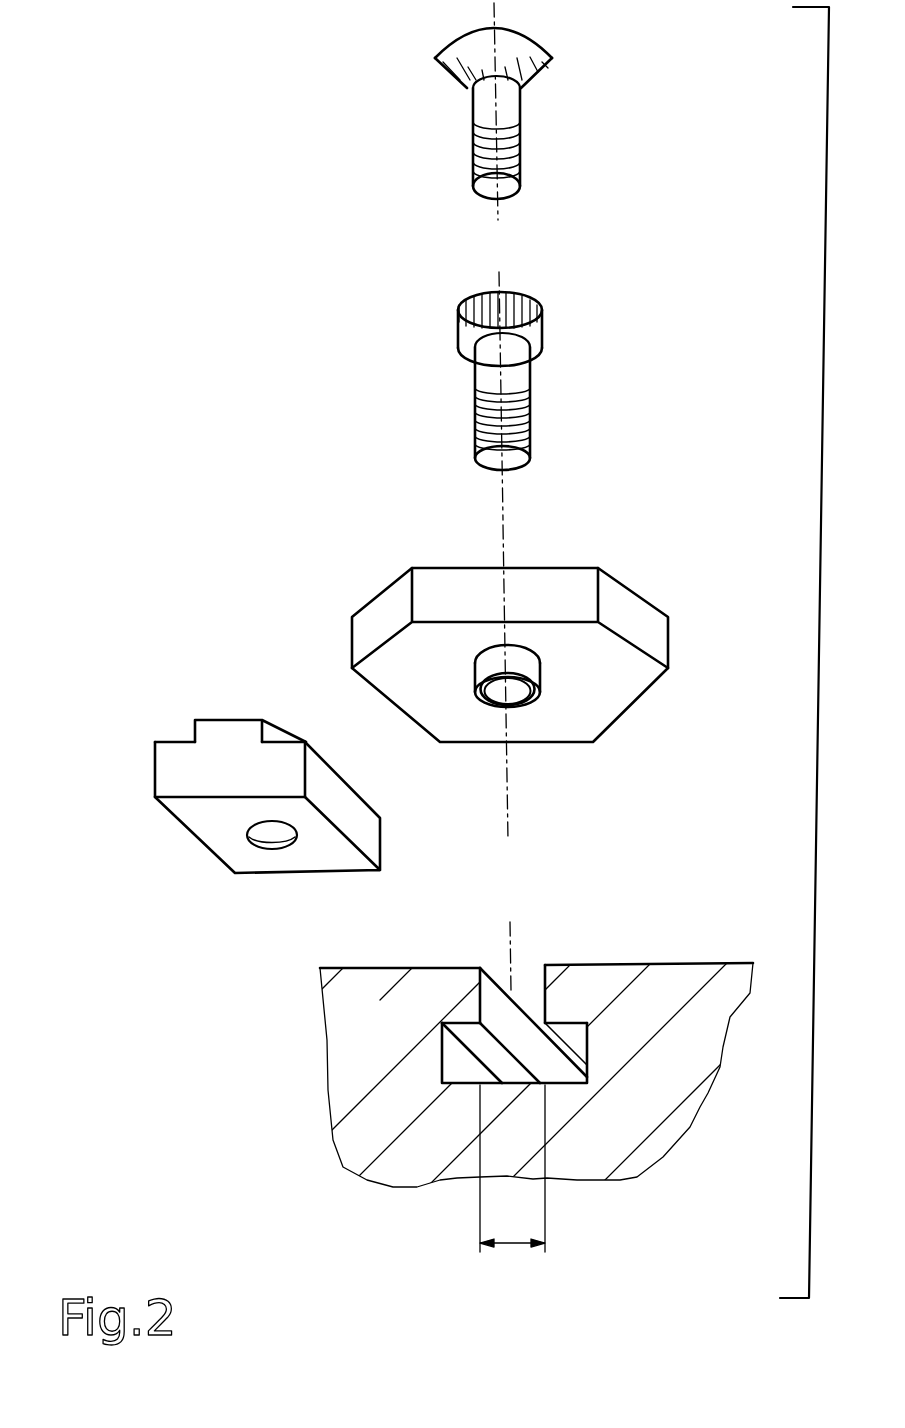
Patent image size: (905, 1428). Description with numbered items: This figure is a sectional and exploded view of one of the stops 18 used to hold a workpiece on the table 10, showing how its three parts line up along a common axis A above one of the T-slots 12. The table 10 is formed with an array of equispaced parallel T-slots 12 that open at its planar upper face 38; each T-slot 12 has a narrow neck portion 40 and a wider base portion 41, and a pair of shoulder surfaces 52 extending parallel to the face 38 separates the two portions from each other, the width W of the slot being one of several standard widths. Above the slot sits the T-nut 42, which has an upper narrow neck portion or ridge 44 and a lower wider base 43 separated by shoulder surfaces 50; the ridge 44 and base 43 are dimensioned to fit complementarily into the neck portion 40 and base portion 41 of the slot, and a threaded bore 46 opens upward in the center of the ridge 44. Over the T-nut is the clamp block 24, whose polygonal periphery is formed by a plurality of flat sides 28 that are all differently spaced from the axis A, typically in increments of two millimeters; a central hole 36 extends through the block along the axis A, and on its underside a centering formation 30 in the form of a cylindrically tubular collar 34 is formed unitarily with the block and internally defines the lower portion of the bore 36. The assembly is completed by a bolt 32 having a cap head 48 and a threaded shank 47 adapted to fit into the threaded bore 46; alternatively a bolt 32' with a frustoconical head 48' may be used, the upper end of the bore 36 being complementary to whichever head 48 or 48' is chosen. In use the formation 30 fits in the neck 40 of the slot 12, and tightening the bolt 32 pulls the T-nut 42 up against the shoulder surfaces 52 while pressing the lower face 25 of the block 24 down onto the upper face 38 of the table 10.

The table 10 is at (546, 1070).
The T-slot 12 is at (454, 1070).
The stop 18 is at (524, 682).
The clamp block 24 is at (608, 690).
The lower face 25 is at (637, 662).
The flat sides 28 is at (552, 585).
The centering formation 30 is at (550, 697).
The bolt 32 is at (497, 374).
The bolt with frustoconical head 32' is at (488, 104).
The cylindrically tubular collar 34 is at (535, 705).
The central hole 36 is at (512, 693).
The upper face 38 is at (735, 966).
The neck portion 40 is at (527, 990).
The base portion 41 is at (587, 1017).
The T-nut 42 is at (215, 791).
The base 43 is at (172, 777).
The ridge 44 is at (213, 732).
The threaded bore 46 is at (267, 850).
The threaded shank 47 is at (517, 373).
The cap head 48 is at (442, 324).
The frustoconical head 48' is at (437, 50).
The shoulder surfaces 50 is at (173, 740).
The shoulder surfaces 52 is at (468, 1037).
The axis A is at (502, 500).
The slot width W is at (512, 1168).